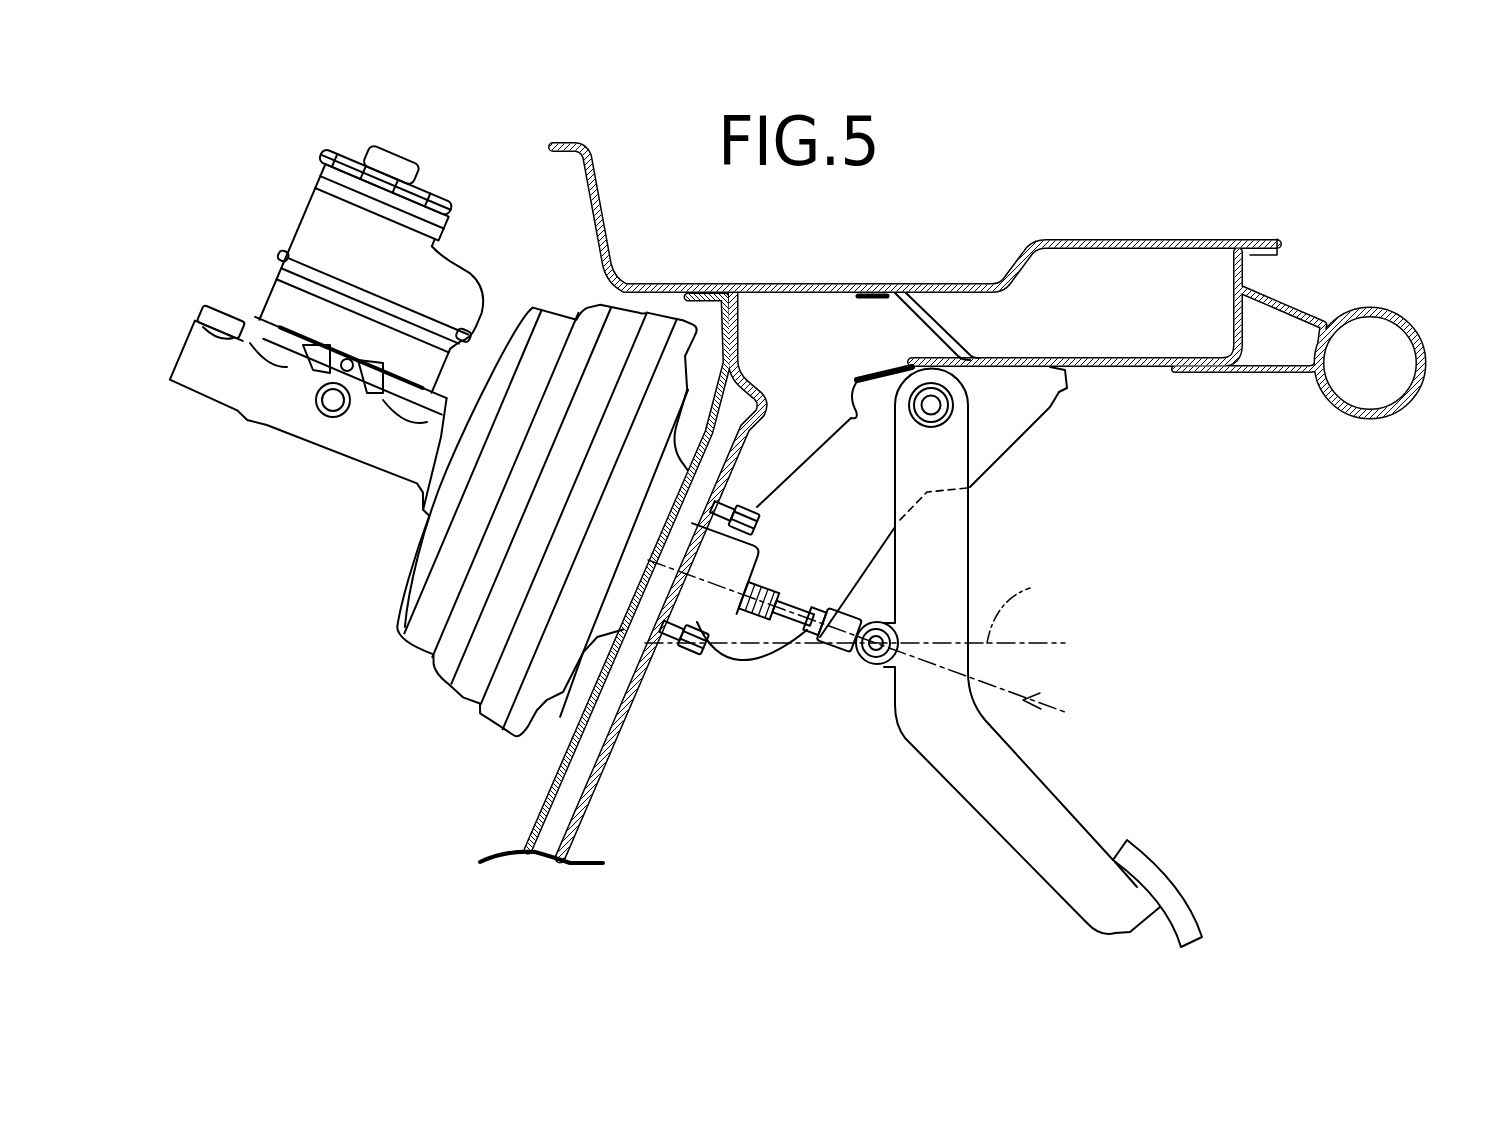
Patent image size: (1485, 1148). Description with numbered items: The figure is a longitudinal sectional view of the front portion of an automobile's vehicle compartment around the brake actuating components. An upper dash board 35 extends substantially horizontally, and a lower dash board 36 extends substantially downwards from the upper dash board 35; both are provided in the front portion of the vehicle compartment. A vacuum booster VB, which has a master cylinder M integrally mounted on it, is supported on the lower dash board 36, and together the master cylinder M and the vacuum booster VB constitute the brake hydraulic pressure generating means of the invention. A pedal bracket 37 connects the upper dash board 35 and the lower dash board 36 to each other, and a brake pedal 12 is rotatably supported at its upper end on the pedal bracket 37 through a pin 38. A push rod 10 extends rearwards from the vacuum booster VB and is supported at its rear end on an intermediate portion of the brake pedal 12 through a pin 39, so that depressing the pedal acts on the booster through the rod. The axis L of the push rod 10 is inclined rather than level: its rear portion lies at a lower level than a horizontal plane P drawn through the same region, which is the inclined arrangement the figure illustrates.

The push rod 10 is at (817, 633).
The brake pedal 12 is at (1052, 830).
The upper dash board 35 is at (893, 275).
The lower dash board 36 is at (625, 719).
The pedal bracket 37 is at (858, 432).
The pin 38 is at (931, 401).
The pin 39 is at (873, 667).
The vacuum booster VB is at (463, 717).
The master cylinder M is at (461, 257).
The horizontal plane P is at (855, 603).
The axis L is at (868, 642).